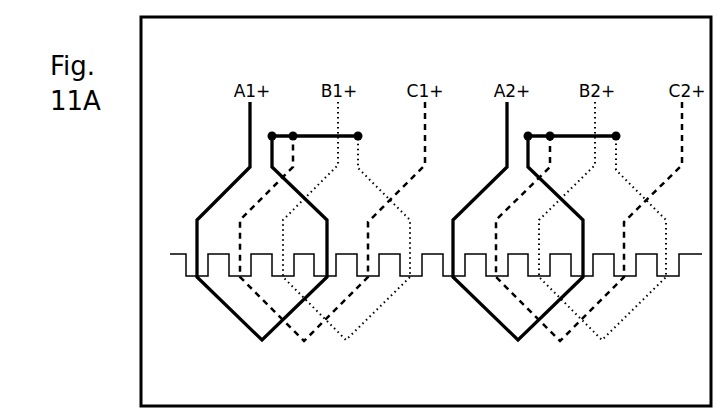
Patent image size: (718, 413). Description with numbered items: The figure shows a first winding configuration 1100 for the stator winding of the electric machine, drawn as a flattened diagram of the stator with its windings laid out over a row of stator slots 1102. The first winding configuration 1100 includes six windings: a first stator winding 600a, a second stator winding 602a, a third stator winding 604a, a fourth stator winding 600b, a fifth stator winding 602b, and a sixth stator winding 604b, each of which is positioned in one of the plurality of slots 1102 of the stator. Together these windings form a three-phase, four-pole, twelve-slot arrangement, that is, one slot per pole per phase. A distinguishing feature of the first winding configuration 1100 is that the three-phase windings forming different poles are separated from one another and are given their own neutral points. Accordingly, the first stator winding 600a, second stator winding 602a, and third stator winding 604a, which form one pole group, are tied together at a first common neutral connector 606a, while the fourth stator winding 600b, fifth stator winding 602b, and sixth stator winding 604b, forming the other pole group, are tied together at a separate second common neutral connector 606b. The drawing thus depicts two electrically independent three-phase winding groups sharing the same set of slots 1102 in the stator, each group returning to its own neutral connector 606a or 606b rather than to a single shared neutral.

The first stator winding 600a is at (248, 116).
The fourth stator winding 600b is at (505, 153).
The second stator winding 602a is at (338, 115).
The fifth stator winding 602b is at (595, 115).
The third stator winding 604a is at (427, 128).
The sixth stator winding 604b is at (545, 328).
The first common neutral connector 606a is at (360, 132).
The second common neutral connector 606b is at (618, 132).
The first winding configuration 1100 is at (211, 390).
The slots 1102 is at (530, 276).